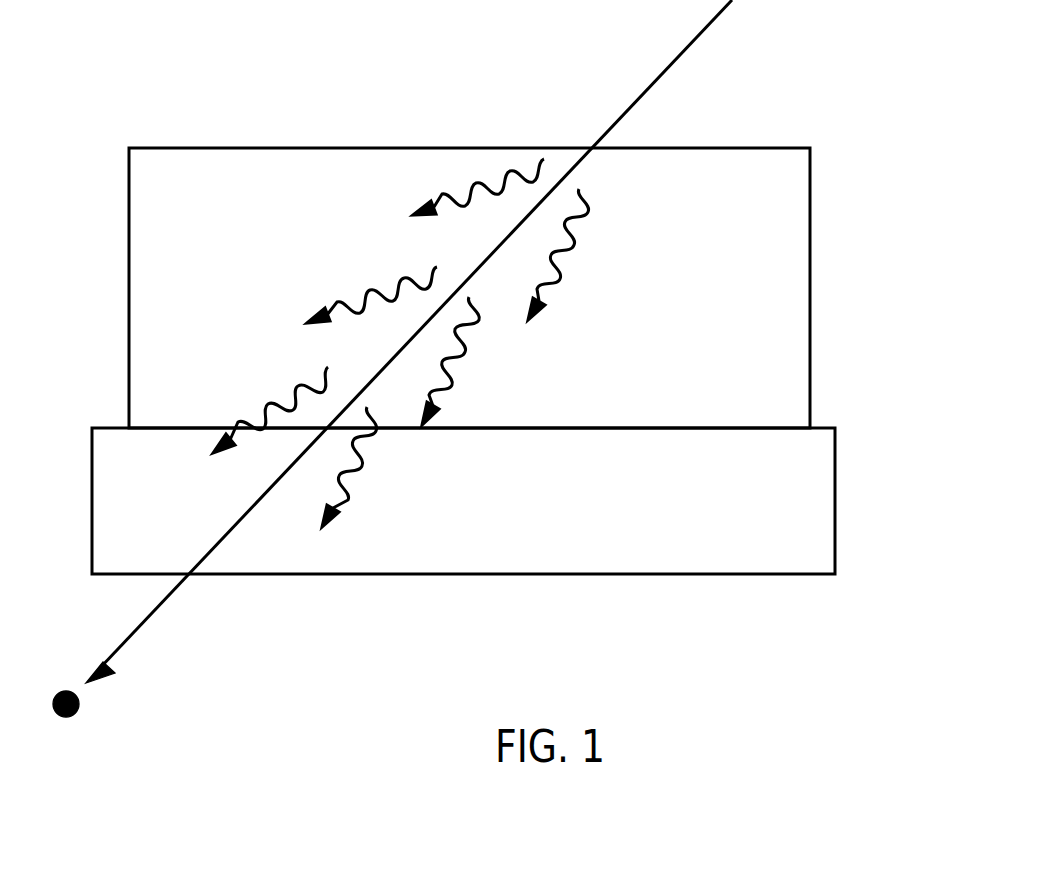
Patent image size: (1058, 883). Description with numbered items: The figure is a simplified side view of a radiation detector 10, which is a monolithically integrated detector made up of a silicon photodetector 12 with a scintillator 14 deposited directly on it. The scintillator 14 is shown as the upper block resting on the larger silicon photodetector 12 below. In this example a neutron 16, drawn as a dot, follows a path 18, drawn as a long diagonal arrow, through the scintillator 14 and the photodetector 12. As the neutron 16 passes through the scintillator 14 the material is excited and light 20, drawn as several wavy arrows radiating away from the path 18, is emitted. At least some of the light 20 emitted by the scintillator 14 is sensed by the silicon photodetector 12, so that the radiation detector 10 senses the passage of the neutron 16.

The radiation detector 10 is at (489, 391).
The silicon photodetector 12 is at (804, 503).
The scintillator 14 is at (796, 228).
The neutron 16 is at (80, 713).
The path 18 is at (623, 113).
The light 20 is at (482, 177).